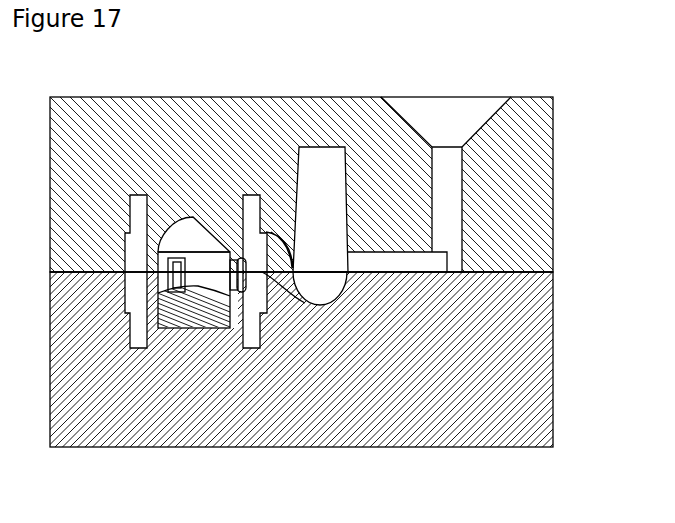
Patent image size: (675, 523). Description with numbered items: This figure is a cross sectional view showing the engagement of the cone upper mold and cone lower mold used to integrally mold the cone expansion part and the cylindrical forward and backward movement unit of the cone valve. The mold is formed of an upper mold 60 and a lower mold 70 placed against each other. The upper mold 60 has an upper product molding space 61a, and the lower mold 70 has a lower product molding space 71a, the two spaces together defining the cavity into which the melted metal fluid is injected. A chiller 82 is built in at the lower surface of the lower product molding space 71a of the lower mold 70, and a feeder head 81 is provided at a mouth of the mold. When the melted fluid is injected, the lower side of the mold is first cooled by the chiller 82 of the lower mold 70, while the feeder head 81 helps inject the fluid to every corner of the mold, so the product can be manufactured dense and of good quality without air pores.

The upper mold 60 is at (523, 205).
The lower mold 70 is at (523, 342).
The upper product molding space 61a is at (207, 260).
The lower product molding space 71a is at (217, 290).
The feeder head 81 is at (348, 170).
The chiller 82 is at (203, 323).